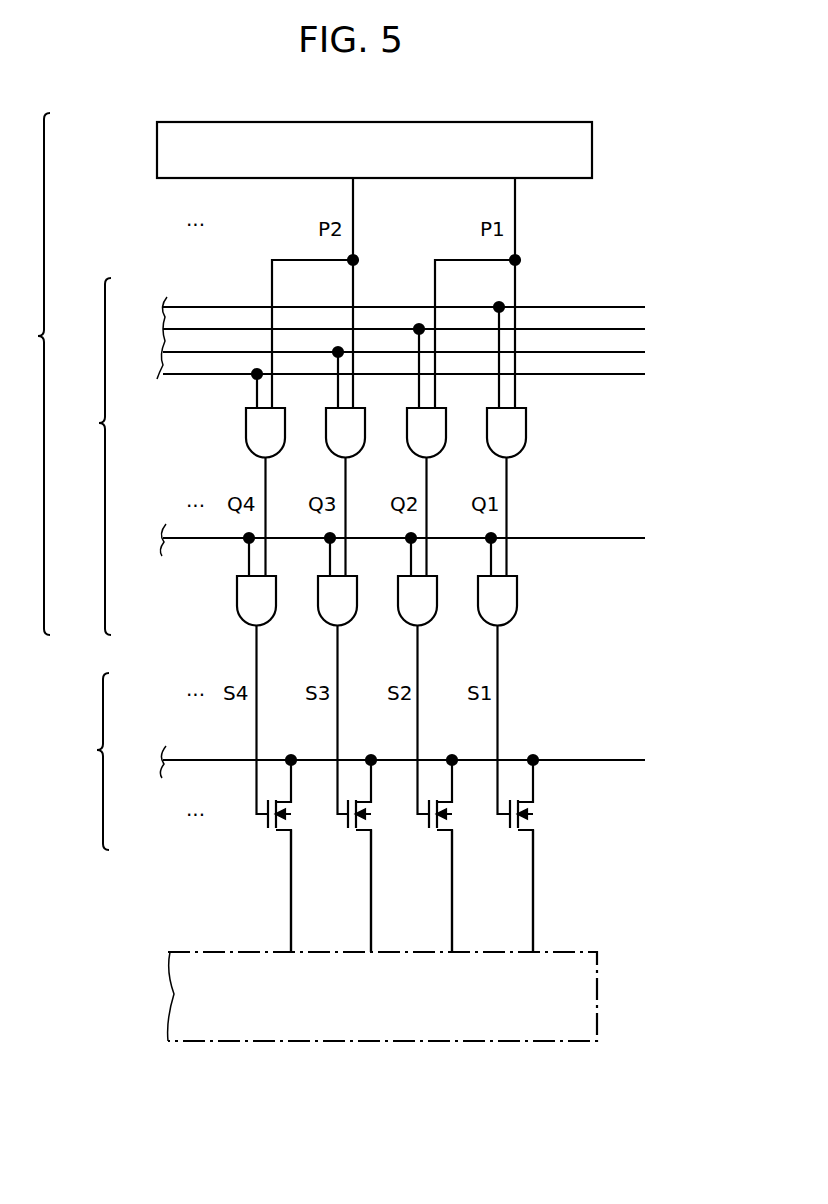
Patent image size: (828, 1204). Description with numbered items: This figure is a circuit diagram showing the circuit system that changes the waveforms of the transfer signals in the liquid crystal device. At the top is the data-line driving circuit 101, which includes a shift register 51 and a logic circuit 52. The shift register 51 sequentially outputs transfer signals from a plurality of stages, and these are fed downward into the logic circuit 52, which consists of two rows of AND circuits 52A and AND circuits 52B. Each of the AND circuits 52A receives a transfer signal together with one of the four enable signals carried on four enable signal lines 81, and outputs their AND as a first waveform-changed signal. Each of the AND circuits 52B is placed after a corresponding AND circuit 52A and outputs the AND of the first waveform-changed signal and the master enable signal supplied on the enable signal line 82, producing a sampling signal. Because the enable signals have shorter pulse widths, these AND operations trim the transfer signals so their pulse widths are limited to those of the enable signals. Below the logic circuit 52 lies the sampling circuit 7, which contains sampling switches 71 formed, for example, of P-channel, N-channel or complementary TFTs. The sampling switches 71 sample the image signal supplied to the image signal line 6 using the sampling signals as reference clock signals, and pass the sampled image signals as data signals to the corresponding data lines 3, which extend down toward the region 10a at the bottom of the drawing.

The shift register 51 is at (262, 122).
The enable signal lines 81 is at (581, 307).
The enable signal line 82 is at (579, 538).
The AND circuits 52A is at (253, 432).
The AND circuits 52B is at (240, 604).
The logic circuit 52 is at (90, 456).
The data-line driving circuit 101 is at (26, 374).
The sampling circuit 7 is at (95, 761).
The image signal line 6 is at (575, 760).
The sampling switches 71 is at (567, 813).
The data lines 3 is at (533, 900).
The image display region 10a is at (597, 995).